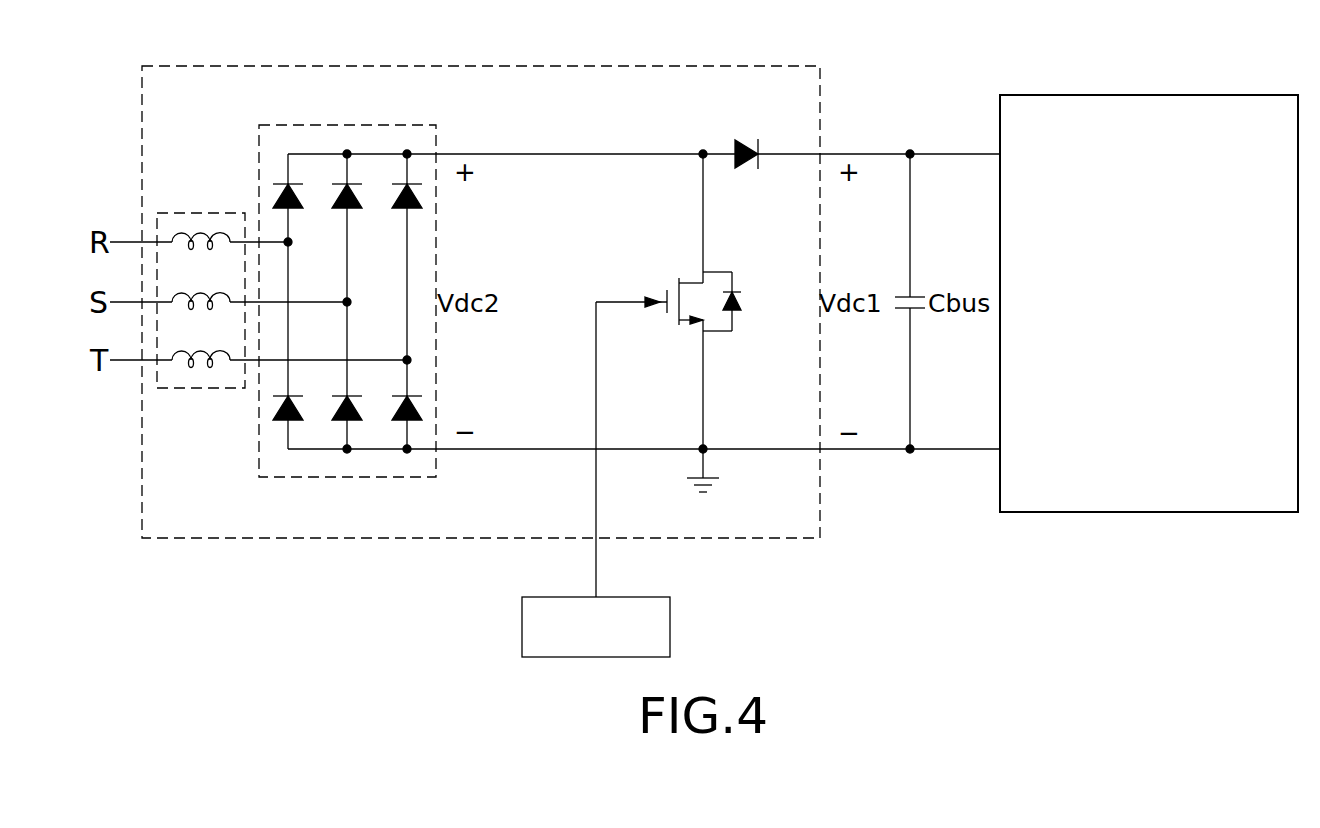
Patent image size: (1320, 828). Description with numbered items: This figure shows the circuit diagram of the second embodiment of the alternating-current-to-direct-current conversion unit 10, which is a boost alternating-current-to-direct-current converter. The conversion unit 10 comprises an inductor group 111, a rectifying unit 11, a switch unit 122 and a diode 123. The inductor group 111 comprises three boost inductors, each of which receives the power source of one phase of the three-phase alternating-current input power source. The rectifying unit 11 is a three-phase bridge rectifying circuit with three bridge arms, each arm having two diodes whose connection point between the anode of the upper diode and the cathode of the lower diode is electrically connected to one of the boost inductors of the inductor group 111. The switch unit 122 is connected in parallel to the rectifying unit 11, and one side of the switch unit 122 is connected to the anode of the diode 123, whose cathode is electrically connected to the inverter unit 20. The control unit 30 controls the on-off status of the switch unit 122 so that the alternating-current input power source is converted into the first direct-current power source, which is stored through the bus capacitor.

The alternating-current-to-direct-current conversion unit 10 is at (543, 70).
The rectifying unit 11 is at (351, 128).
The inductor group 111 is at (199, 214).
The switch unit 122 is at (688, 280).
The diode 123 is at (747, 171).
The inverter unit 20 is at (1148, 101).
The control unit 30 is at (584, 604).